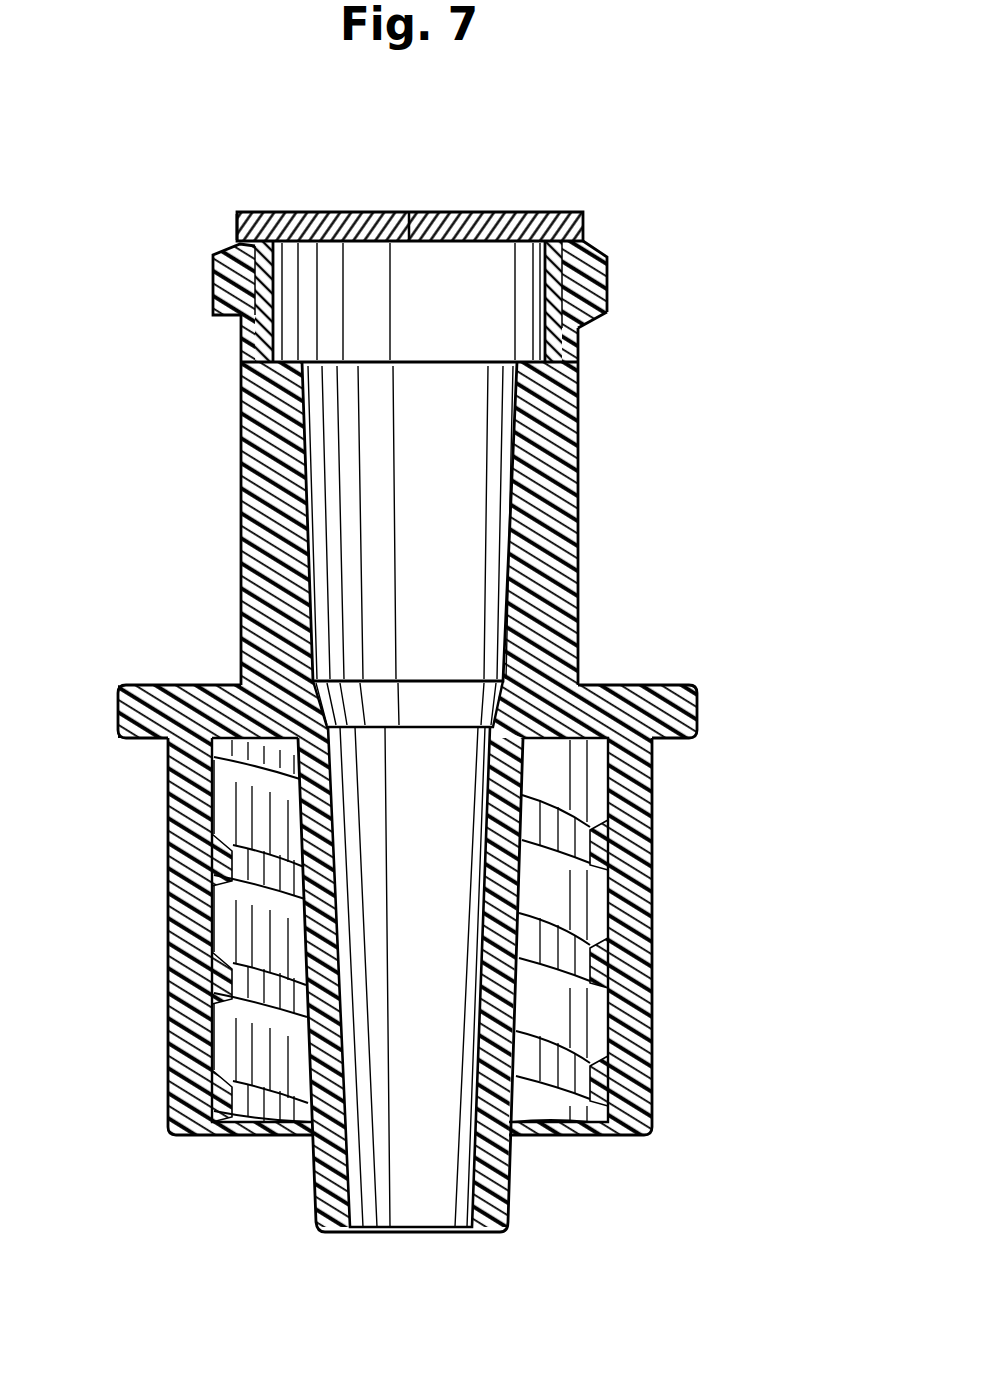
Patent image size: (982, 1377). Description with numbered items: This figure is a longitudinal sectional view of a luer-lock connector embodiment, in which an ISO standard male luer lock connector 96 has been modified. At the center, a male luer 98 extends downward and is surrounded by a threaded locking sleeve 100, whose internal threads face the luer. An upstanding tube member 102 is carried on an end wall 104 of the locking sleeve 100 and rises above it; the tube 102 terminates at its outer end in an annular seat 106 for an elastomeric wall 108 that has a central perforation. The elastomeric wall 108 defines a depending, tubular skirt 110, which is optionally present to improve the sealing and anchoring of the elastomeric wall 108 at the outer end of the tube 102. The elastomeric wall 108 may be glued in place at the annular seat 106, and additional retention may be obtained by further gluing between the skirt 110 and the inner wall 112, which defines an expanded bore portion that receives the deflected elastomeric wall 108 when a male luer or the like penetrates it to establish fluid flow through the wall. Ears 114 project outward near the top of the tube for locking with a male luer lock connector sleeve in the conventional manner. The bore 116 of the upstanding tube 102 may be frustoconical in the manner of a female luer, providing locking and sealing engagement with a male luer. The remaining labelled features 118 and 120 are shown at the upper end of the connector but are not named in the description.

The male luer lock connector 96 is at (150, 934).
The male luer 98 is at (513, 1168).
The threaded locking sleeve 100 is at (652, 920).
The upstanding tube member 102 is at (578, 490).
The end wall 104 is at (645, 683).
The annular seat 106 is at (218, 273).
The elastomeric wall 108 is at (478, 212).
The tubular skirt 110 is at (273, 314).
The inner wall 112 is at (583, 315).
The ears 114 is at (593, 247).
The bore 116 is at (312, 572).
The cap septum portion 118 is at (303, 211).
The cap edge 120 is at (238, 225).